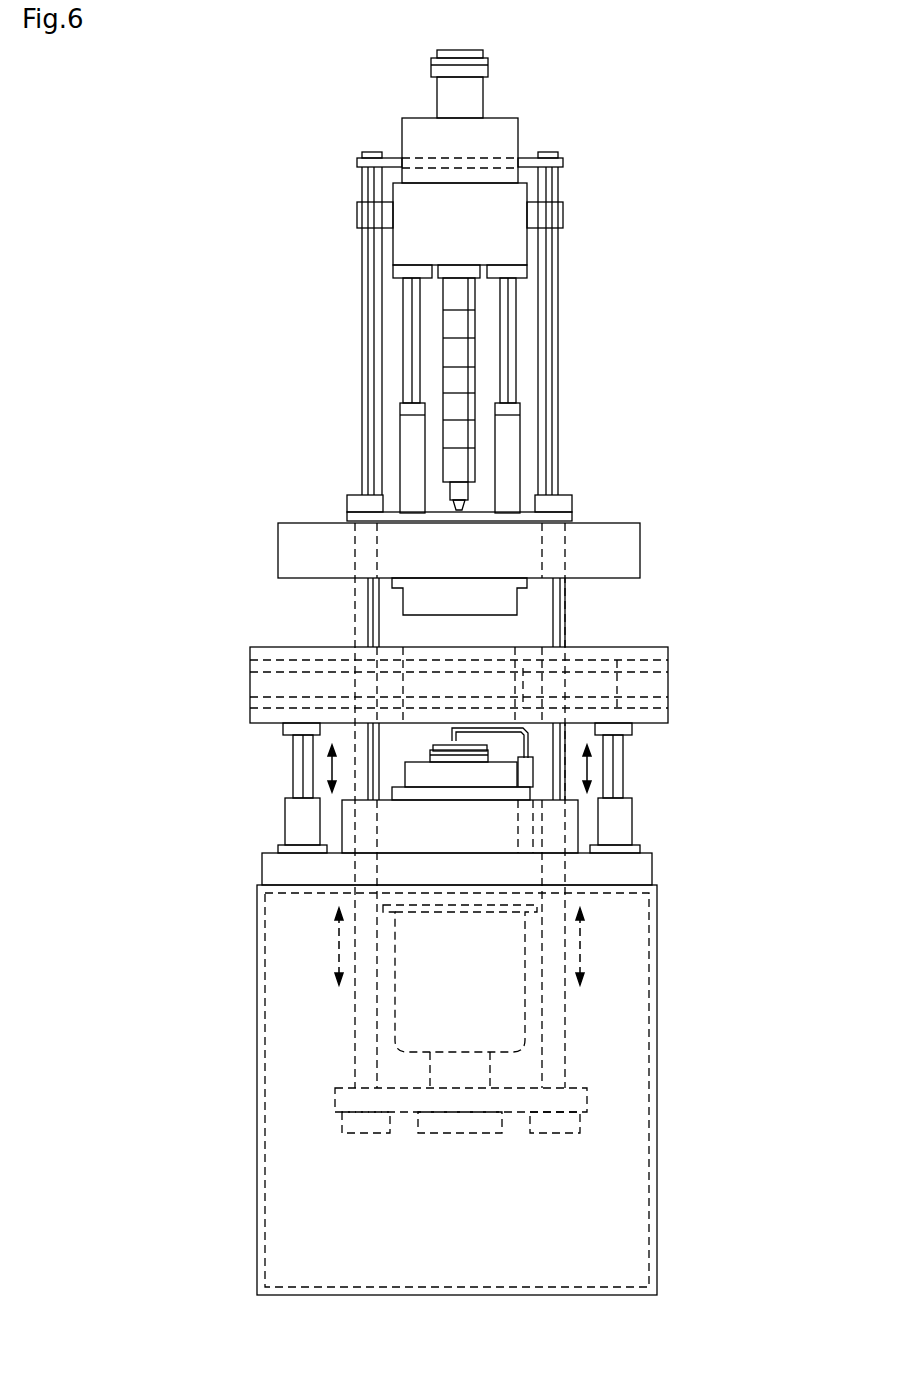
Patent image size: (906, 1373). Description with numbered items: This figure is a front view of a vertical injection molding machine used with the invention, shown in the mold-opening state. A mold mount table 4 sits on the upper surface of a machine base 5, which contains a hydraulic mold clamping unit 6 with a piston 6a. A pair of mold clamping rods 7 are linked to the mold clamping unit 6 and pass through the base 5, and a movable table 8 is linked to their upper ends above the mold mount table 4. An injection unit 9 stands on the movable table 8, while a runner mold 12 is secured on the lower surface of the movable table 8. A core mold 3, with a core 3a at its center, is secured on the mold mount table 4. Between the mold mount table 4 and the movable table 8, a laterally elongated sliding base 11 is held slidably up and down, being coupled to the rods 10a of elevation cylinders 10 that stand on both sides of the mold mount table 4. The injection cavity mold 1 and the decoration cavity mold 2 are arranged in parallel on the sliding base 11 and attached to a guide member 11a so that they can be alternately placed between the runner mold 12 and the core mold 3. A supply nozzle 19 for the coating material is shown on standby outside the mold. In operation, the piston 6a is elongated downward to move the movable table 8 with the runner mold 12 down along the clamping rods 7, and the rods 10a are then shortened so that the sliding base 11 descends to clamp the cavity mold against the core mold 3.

The injection cavity mold 1 is at (465, 683).
The decoration cavity mold 2 is at (588, 680).
The core mold 3 is at (443, 785).
The core 3a is at (440, 752).
The mold mount table 4 is at (312, 870).
The machine base 5 is at (262, 1070).
The hydraulic mold clamping unit 6 is at (592, 1004).
The piston 6a is at (462, 1072).
The mold clamping rods 7 is at (368, 600).
The movable table 8 is at (345, 553).
The injection unit 9 is at (575, 328).
The elevation cylinders 10 is at (300, 825).
The rods 10a is at (302, 785).
The sliding base 11 is at (272, 687).
The guide member 11a is at (645, 683).
The runner mold 12 is at (490, 593).
The supply nozzle 19 is at (487, 738).